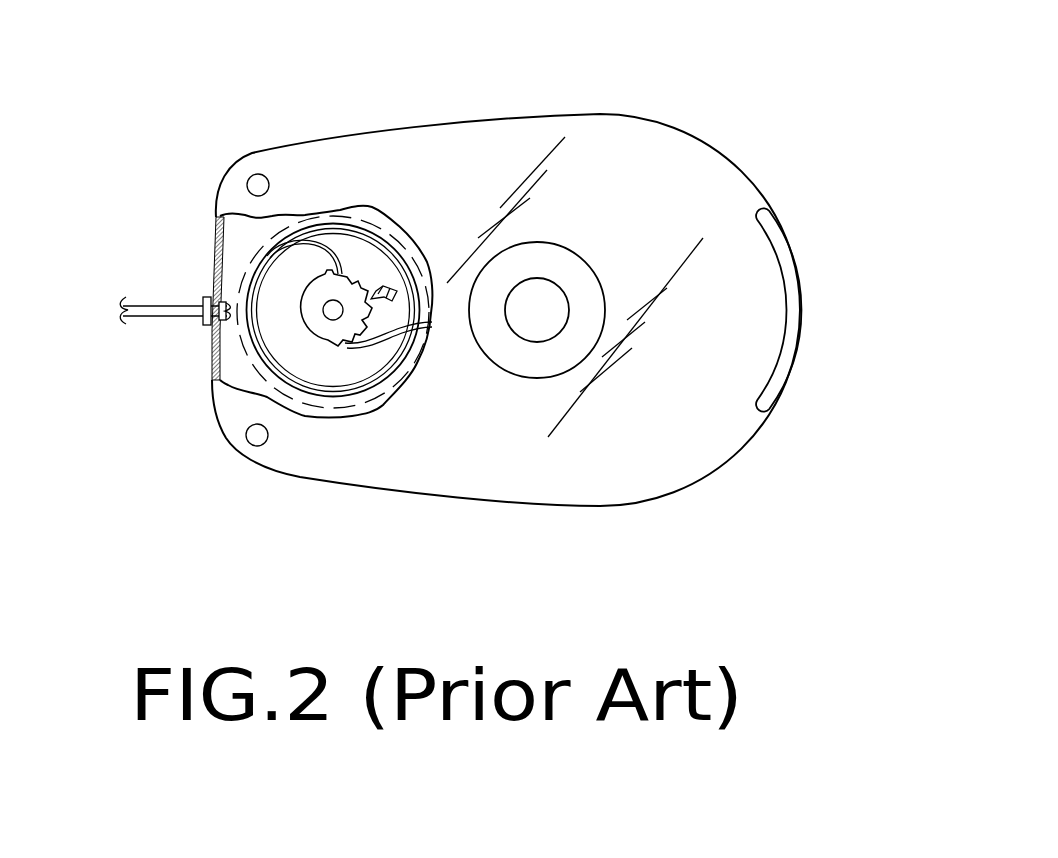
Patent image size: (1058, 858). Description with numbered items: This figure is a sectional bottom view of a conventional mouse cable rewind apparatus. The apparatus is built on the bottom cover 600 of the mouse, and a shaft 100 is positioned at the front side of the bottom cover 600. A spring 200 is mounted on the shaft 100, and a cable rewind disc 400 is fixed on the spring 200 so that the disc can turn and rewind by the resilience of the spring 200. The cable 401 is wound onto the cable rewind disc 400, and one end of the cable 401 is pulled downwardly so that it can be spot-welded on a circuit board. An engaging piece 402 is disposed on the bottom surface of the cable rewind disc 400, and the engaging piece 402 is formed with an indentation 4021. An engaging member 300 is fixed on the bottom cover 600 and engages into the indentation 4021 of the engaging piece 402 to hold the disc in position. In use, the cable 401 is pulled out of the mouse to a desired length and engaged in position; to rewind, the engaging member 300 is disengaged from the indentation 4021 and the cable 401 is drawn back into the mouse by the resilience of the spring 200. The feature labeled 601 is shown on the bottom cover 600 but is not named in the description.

The shaft 100 is at (347, 343).
The spring 200 is at (325, 343).
The engaging member 300 is at (388, 286).
The cable rewind disc 400 is at (247, 345).
The cable 401 is at (170, 307).
The engaging piece 402 is at (320, 323).
The indentation 4021 is at (358, 283).
The bottom cover 600 is at (620, 138).
The transparent window 601 is at (583, 422).